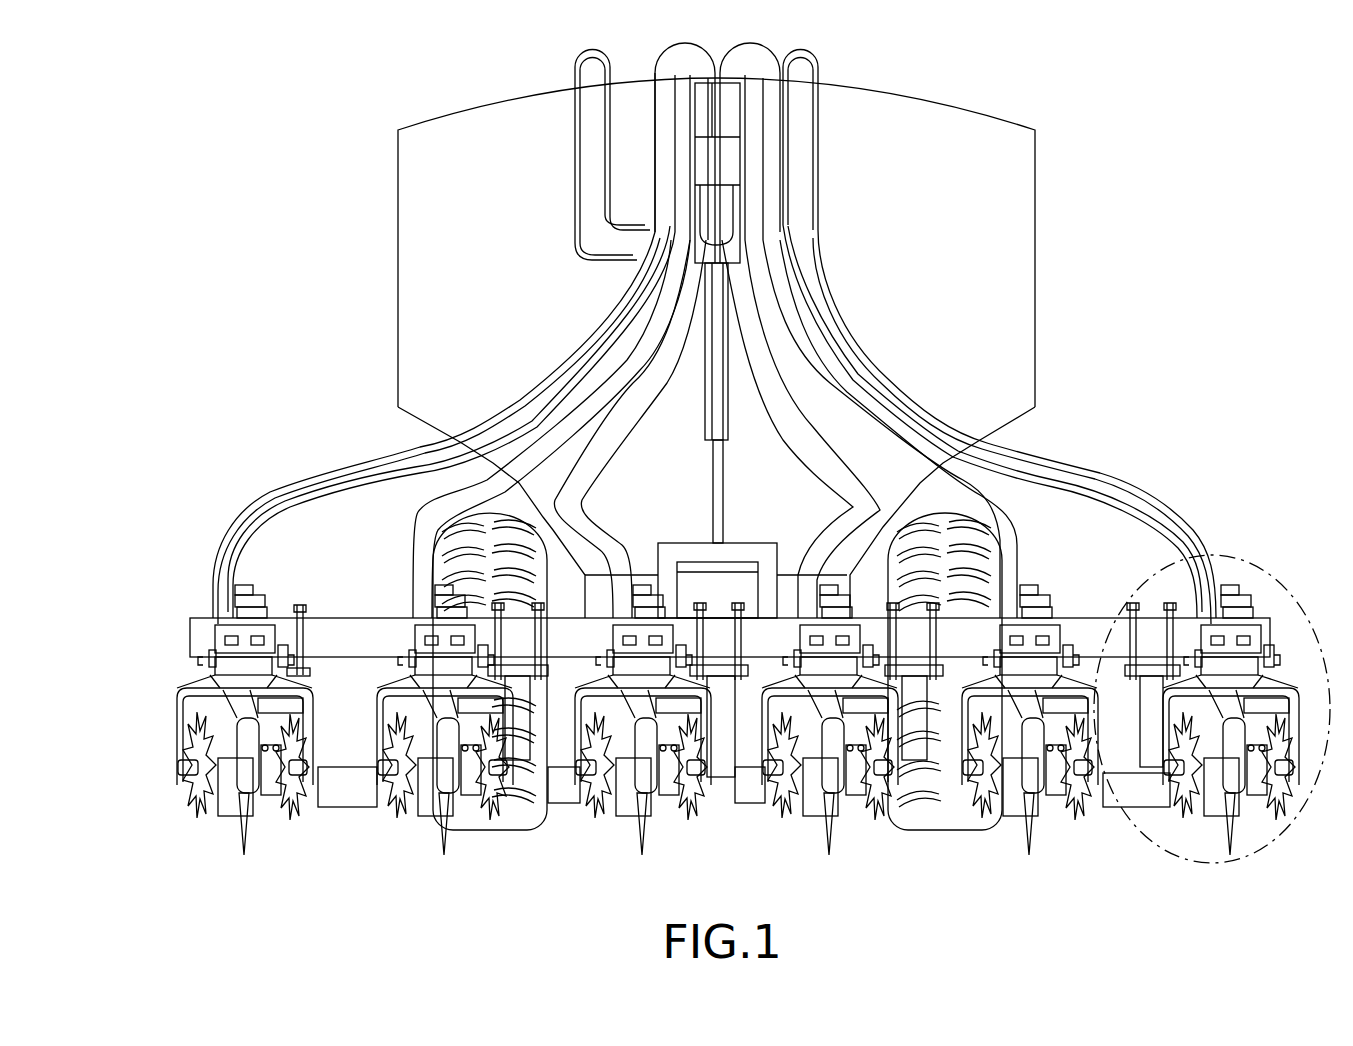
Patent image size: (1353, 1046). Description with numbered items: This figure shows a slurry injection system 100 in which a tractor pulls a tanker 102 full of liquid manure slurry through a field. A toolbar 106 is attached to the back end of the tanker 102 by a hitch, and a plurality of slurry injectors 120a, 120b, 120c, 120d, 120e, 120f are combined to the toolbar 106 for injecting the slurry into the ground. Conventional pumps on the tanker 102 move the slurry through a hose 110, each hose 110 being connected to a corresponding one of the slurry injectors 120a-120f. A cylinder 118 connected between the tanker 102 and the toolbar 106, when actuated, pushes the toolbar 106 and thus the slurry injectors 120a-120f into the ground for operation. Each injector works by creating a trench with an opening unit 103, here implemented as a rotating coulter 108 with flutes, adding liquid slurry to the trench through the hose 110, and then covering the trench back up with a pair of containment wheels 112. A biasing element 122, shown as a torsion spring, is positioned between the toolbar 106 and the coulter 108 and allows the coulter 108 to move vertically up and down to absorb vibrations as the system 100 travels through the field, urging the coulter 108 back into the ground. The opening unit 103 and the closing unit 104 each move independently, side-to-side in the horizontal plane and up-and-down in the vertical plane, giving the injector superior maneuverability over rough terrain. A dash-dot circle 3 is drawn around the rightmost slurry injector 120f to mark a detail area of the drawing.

The slurry injection system 100 is at (702, 484).
The tanker 102 is at (990, 117).
The opening unit 103 is at (292, 857).
The closing unit 104 is at (136, 813).
The toolbar 106 is at (203, 636).
The rotating coulter 108 is at (196, 816).
The hose 110 is at (1107, 474).
The containment wheels 112 is at (231, 800).
The cylinder 118 is at (719, 370).
The slurry injector 120a is at (213, 753).
The slurry injector 120b is at (445, 753).
The slurry injector 120c is at (643, 753).
The slurry injector 120d is at (830, 753).
The slurry injector 120e is at (1030, 753).
The slurry injector 120f is at (1231, 755).
The biasing element 122 is at (1145, 693).
The detail region 3 is at (1280, 555).